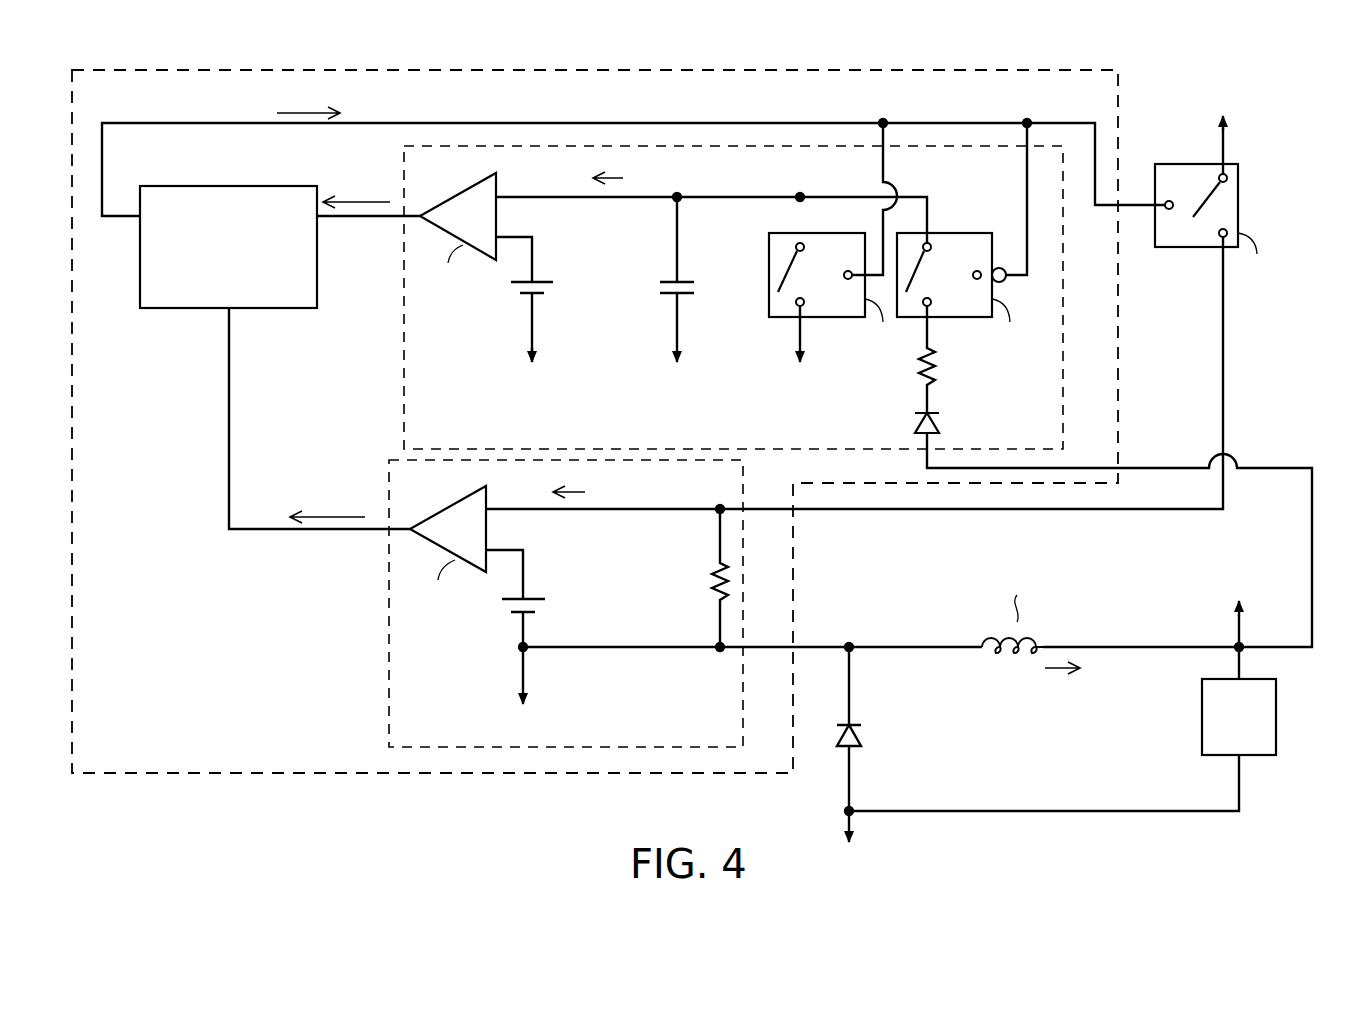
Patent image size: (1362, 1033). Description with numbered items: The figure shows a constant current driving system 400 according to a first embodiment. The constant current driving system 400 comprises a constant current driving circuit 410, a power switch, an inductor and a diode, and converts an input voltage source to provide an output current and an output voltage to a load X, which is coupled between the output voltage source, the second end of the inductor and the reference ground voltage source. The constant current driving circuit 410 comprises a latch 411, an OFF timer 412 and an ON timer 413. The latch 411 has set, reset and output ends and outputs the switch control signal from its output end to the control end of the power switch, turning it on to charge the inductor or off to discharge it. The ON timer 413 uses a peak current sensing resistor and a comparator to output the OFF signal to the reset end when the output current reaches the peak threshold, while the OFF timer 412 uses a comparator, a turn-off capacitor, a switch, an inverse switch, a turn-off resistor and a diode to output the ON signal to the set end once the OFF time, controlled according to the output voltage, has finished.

The constant current driving system 400 is at (1254, 100).
The constant current driving circuit 410 is at (263, 774).
The latch 411 is at (247, 186).
The OFF timer 412 is at (404, 337).
The ON timer 413 is at (389, 635).
The load X is at (1276, 732).